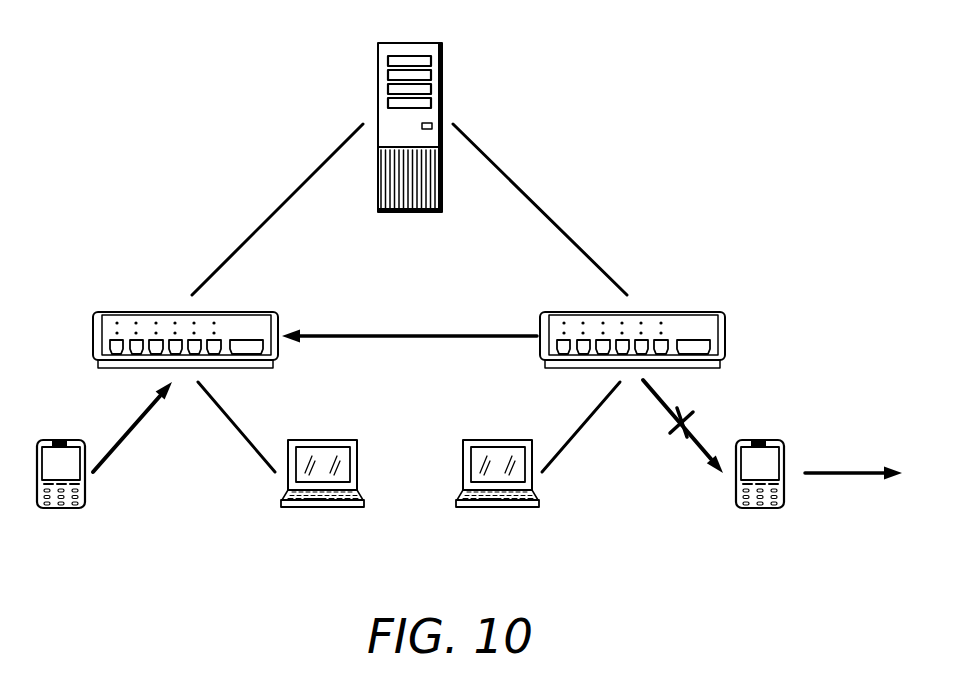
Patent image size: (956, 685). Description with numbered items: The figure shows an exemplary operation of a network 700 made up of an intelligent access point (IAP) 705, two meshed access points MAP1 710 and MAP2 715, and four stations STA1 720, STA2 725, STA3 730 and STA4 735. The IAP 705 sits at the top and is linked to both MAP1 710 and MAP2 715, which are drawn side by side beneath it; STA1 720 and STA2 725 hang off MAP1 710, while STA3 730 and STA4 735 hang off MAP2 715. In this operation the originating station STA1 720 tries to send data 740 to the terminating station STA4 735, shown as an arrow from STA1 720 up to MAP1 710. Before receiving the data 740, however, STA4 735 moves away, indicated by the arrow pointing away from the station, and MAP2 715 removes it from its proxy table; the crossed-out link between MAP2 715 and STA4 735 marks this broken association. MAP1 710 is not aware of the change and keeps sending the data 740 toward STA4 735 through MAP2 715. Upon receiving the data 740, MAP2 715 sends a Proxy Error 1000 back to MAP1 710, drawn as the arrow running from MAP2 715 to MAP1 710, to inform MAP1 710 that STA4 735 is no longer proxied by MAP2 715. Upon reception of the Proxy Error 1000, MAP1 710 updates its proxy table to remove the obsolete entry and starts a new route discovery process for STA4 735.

The network 700 is at (90, 66).
The intelligent access point (IAP) 705 is at (424, 43).
The meshed access point MAP1 710 is at (257, 312).
The meshed access point MAP2 715 is at (703, 312).
The station STA1 720 is at (62, 440).
The station STA2 725 is at (338, 440).
The station STA3 730 is at (503, 440).
The station STA4 735 is at (770, 440).
The data 740 is at (161, 461).
The Proxy Error (PERR) 1000 is at (390, 311).